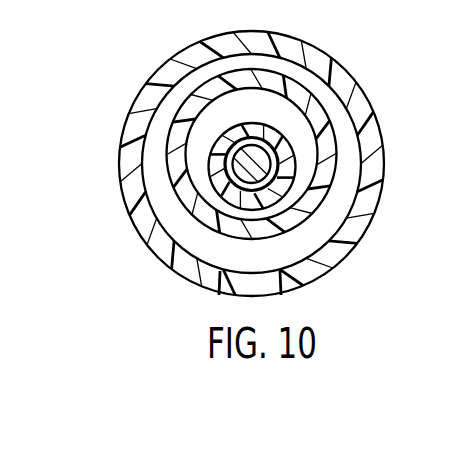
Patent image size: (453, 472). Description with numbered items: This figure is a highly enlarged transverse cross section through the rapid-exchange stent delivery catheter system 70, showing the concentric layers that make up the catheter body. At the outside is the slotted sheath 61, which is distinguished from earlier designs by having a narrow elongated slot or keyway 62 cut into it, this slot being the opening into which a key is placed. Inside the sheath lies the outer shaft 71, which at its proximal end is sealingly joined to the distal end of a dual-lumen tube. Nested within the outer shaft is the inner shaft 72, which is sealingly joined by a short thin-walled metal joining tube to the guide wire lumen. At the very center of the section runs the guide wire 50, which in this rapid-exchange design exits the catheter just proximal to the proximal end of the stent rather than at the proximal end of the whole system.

The stent delivery catheter system 70 is at (160, 34).
The slotted sheath 61 is at (121, 148).
The slot 62 is at (283, 285).
The outer shaft 71 is at (221, 240).
The inner shaft 72 is at (284, 187).
The guide wire 50 is at (270, 163).